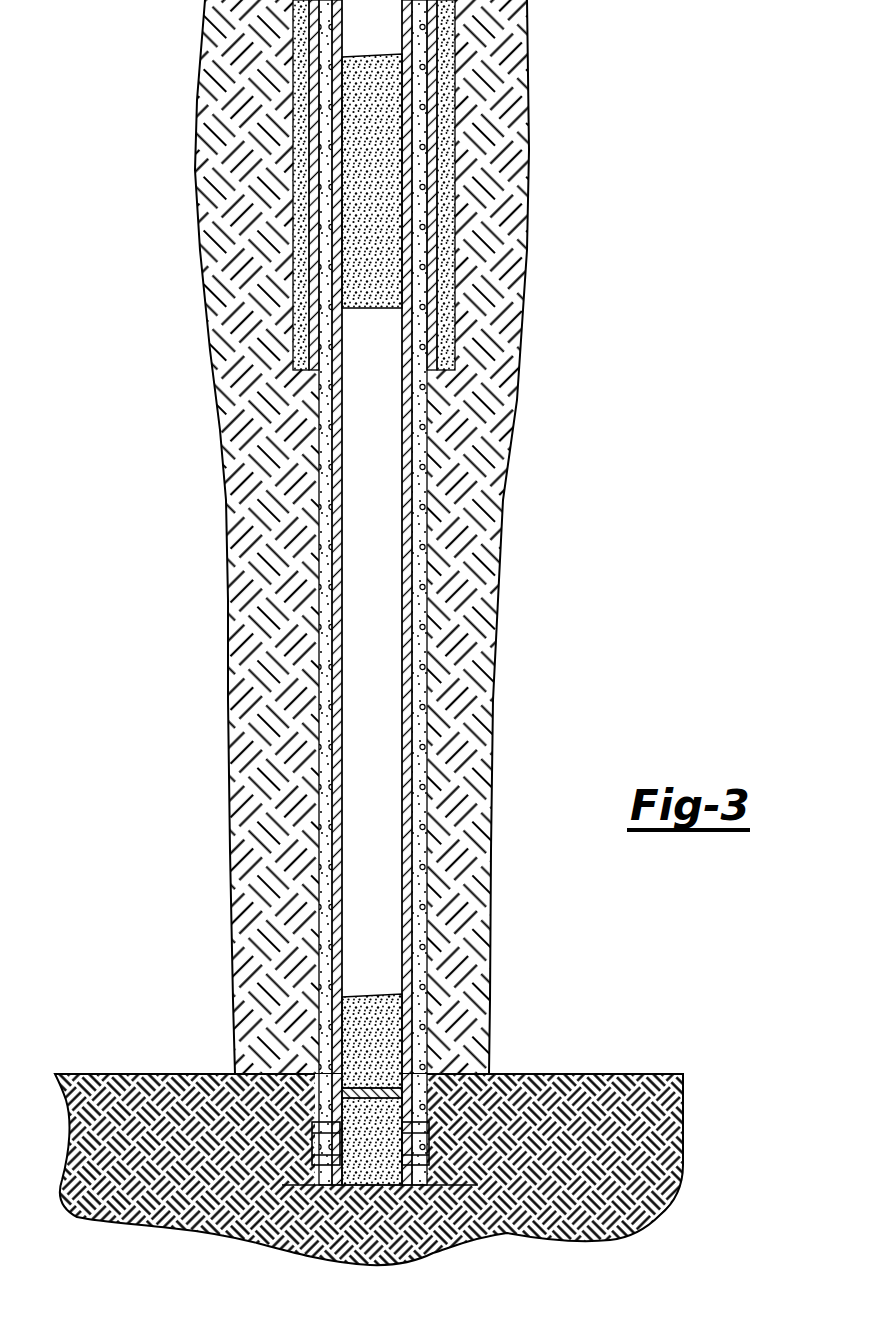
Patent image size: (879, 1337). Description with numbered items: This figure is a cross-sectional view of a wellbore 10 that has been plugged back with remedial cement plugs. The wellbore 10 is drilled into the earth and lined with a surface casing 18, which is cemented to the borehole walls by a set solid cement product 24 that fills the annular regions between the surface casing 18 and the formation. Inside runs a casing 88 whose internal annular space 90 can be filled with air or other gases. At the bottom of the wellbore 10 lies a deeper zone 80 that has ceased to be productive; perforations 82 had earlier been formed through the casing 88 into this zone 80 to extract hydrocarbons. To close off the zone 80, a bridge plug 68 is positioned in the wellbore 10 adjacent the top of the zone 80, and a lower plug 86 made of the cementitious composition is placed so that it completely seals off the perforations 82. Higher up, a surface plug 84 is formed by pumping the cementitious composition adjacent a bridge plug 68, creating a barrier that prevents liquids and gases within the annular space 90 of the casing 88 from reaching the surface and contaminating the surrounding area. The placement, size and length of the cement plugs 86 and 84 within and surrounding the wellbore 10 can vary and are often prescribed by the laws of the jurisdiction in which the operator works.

The wellbore 10 is at (165, 689).
The surface casing 18 is at (433, 275).
The solid cement product 24 is at (460, 330).
The bridge plug 68 is at (403, 1075).
The deeper zone 80 is at (280, 1123).
The perforations 82 is at (428, 1151).
The surface plug 84 is at (355, 288).
The lower plug 86 is at (400, 1012).
The casing 88 is at (420, 470).
The bore 90 is at (382, 753).